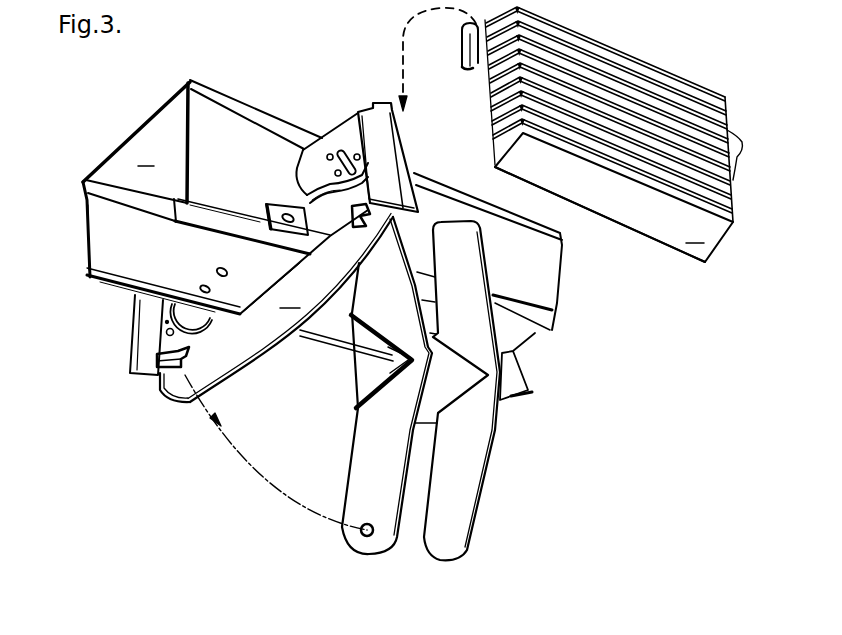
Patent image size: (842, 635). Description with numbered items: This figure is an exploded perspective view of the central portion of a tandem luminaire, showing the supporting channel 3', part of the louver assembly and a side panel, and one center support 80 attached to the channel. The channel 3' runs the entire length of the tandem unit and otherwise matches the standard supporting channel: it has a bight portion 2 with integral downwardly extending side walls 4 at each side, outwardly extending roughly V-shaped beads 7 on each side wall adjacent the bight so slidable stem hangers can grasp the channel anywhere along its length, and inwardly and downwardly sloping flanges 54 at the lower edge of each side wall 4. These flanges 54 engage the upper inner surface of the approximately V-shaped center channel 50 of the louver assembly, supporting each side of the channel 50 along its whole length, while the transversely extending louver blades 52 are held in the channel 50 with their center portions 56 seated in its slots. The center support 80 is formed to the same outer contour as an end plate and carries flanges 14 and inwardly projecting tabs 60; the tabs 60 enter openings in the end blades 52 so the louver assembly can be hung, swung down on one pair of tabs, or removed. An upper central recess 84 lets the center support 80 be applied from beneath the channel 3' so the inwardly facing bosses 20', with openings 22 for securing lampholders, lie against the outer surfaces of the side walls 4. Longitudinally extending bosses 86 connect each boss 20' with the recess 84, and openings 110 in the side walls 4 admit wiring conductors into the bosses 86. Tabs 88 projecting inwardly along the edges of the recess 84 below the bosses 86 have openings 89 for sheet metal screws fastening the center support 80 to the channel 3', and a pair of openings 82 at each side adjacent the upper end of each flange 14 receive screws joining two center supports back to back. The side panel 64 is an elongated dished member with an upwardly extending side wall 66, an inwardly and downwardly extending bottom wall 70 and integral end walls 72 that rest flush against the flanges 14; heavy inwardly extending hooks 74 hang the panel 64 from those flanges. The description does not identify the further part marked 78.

The bight portion 2 is at (128, 139).
The channel 3' is at (146, 156).
The side walls 4 is at (190, 143).
The beads 7 is at (219, 92).
The flanges 14 is at (368, 108).
The bosses 20' is at (328, 208).
The openings 22 is at (341, 153).
The center channel 50 is at (370, 395).
The louver blades 52 is at (485, 255).
The flanges 54 is at (221, 218).
The center portion 56 is at (393, 366).
The tabs 60 is at (170, 390).
The side panel 64 is at (614, 197).
The side wall 66 is at (726, 99).
The bottom wall 70 is at (648, 226).
The end walls 72 is at (489, 104).
The hooks 74 is at (461, 55).
The fin stack 78 is at (746, 155).
The center support 80 is at (296, 382).
The openings 82 is at (175, 333).
The upper central recess 84 is at (259, 300).
The bosses 86 is at (303, 174).
The tabs 88 is at (265, 208).
The openings 89 is at (286, 211).
The openings 110 is at (219, 270).